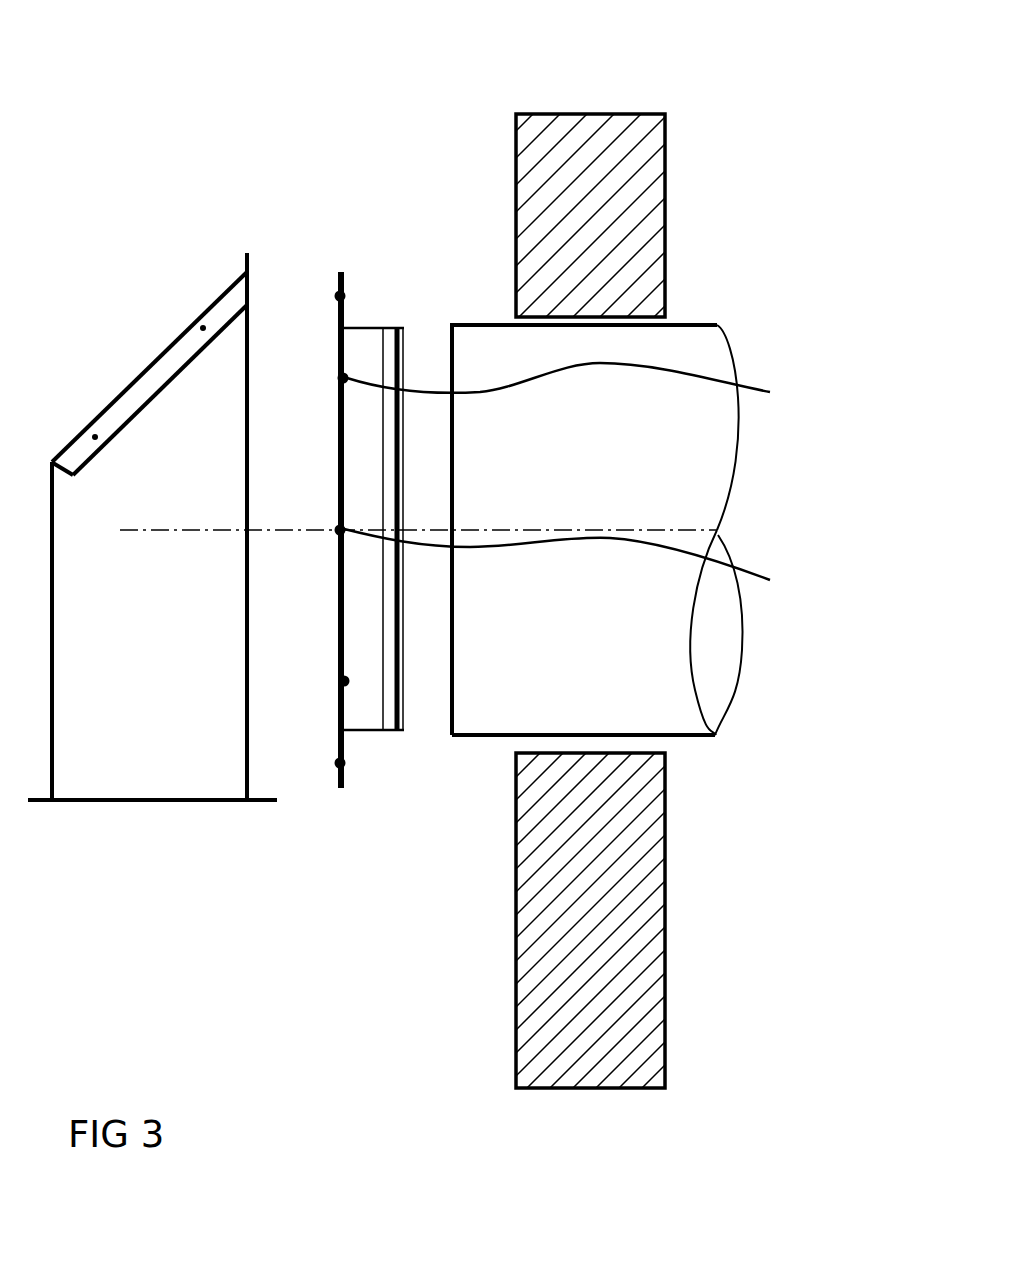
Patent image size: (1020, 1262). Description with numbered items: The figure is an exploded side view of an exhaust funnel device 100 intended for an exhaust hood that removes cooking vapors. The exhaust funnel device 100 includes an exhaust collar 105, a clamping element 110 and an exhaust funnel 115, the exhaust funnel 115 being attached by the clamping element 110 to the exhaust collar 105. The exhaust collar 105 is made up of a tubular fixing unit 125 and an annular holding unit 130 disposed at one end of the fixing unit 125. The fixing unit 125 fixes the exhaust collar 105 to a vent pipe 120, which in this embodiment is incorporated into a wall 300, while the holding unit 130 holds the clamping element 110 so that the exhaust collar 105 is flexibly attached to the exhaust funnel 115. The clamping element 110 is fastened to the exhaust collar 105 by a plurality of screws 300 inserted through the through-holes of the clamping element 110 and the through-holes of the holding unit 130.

The exhaust funnel device 100 is at (212, 128).
The exhaust collar 105 is at (323, 220).
The clamping element 110 is at (315, 791).
The exhaust funnel 115 is at (170, 343).
The vent pipe 120 is at (732, 486).
The tubular fixing unit 125 is at (393, 333).
The annular holding unit 130 is at (312, 300).
The wall / screws 300 is at (343, 297).